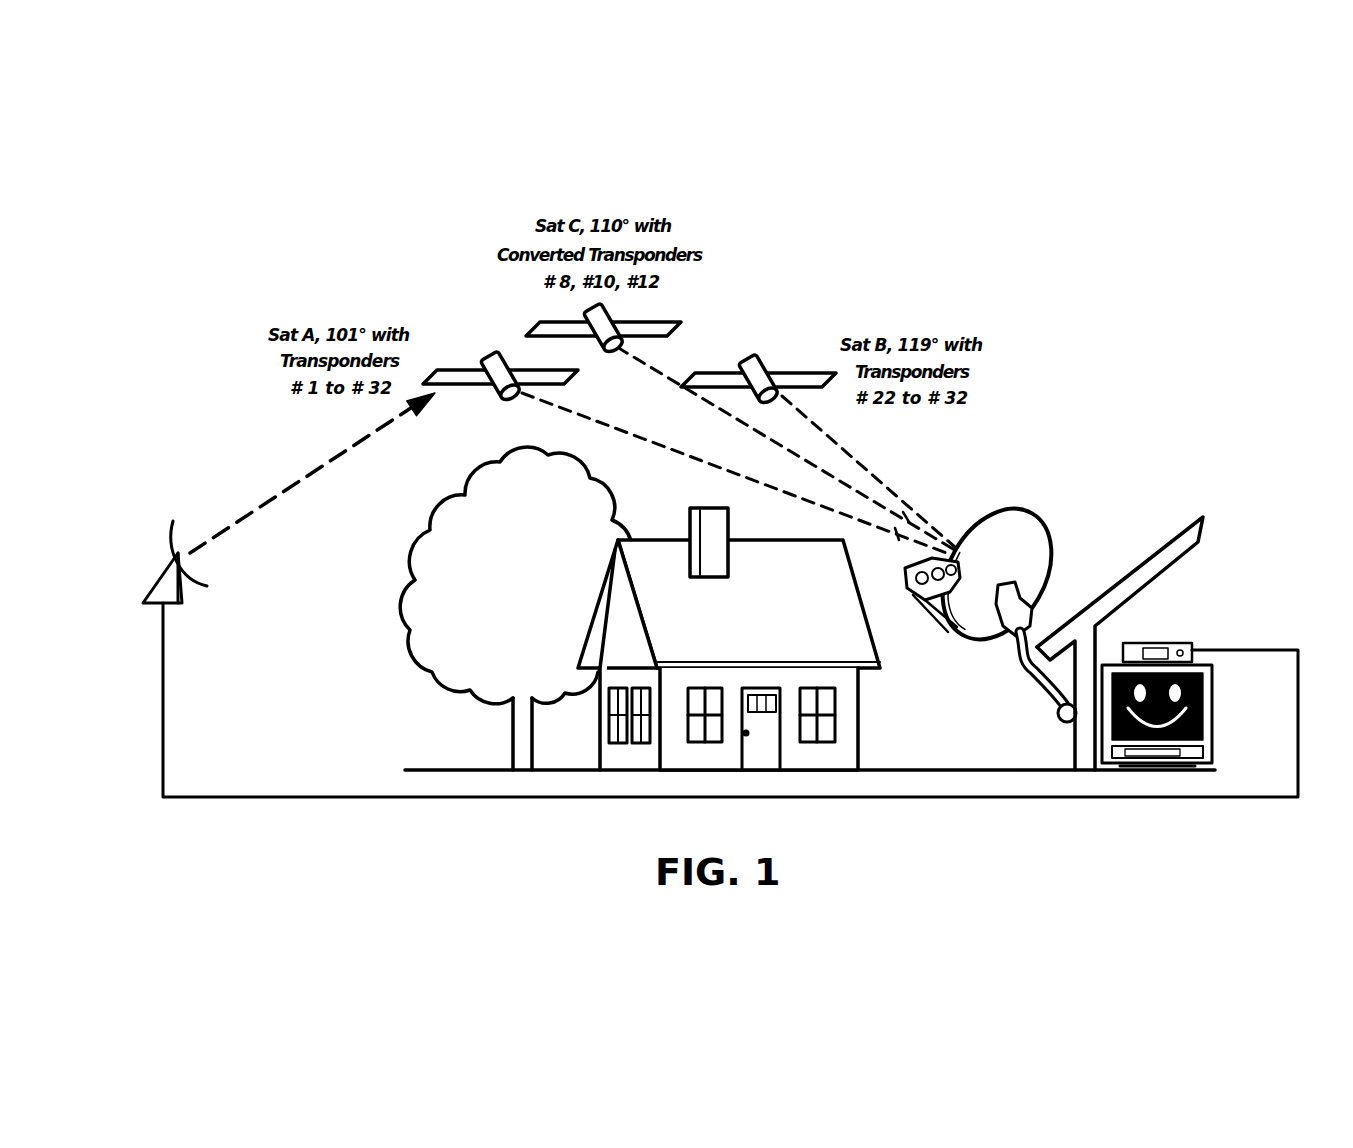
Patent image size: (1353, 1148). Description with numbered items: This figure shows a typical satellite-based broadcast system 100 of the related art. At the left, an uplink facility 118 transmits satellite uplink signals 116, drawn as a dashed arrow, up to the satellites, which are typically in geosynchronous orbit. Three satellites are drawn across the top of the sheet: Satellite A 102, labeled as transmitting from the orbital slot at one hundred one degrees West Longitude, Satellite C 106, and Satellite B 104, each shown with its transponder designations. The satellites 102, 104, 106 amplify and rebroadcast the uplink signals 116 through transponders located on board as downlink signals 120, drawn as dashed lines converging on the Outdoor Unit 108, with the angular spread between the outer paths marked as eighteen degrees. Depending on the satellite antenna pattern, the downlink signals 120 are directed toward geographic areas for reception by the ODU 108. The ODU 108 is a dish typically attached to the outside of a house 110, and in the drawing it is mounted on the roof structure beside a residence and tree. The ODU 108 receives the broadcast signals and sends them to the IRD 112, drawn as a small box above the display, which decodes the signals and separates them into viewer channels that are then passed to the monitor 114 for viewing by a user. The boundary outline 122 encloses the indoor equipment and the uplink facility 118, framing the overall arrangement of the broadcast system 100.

The system 100 is at (722, 152).
The Satellite A 102 is at (497, 352).
The Satellite B 104 is at (781, 360).
The Satellite C 106 is at (645, 315).
The Outdoor Unit 108 is at (1017, 509).
The house 110 is at (1148, 545).
The IRD 112 is at (1158, 641).
The monitor 114 is at (1210, 697).
The satellite uplink signals 116 is at (306, 471).
The uplink facility 118 is at (161, 575).
The downlink signals 120 is at (901, 492).
The subscriber premises 122 is at (1237, 648).